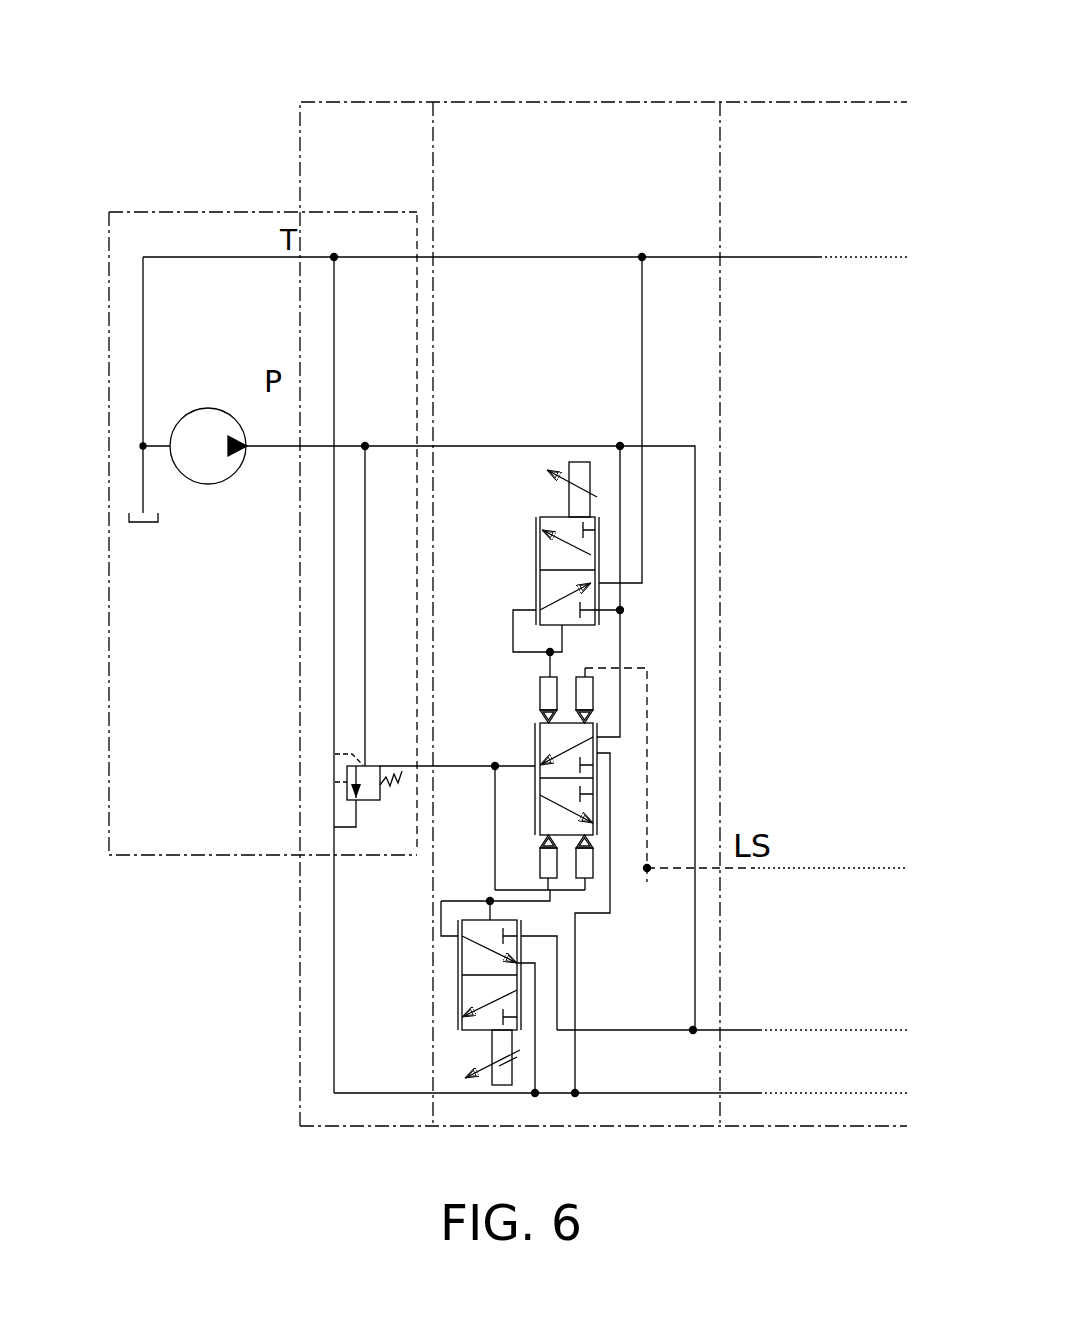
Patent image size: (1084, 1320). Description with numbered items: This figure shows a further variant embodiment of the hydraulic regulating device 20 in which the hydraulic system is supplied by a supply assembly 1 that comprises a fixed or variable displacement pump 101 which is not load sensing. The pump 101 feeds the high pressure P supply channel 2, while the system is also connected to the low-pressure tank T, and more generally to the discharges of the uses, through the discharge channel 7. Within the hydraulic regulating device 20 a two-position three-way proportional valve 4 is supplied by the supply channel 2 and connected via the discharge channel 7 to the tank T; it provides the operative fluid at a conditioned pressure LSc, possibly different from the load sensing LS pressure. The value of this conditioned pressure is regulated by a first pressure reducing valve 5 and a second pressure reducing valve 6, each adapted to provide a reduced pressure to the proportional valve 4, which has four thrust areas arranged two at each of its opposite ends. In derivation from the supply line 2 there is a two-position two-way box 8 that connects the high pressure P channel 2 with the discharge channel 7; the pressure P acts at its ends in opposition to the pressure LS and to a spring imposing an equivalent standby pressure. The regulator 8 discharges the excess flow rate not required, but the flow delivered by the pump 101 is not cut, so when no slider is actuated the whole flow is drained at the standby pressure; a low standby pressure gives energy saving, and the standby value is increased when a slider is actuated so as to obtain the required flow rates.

The supply assembly 1 is at (140, 210).
The pump 101 is at (205, 408).
The hydraulic regulating device 20 is at (627, 100).
The discharge channel 7 is at (477, 256).
The supply channel 2 is at (512, 445).
The first pressure reducing valve 5 is at (603, 540).
The proportional valve 4 is at (600, 755).
The second pressure reducing valve 6 is at (517, 990).
The regulator box 8 is at (347, 787).